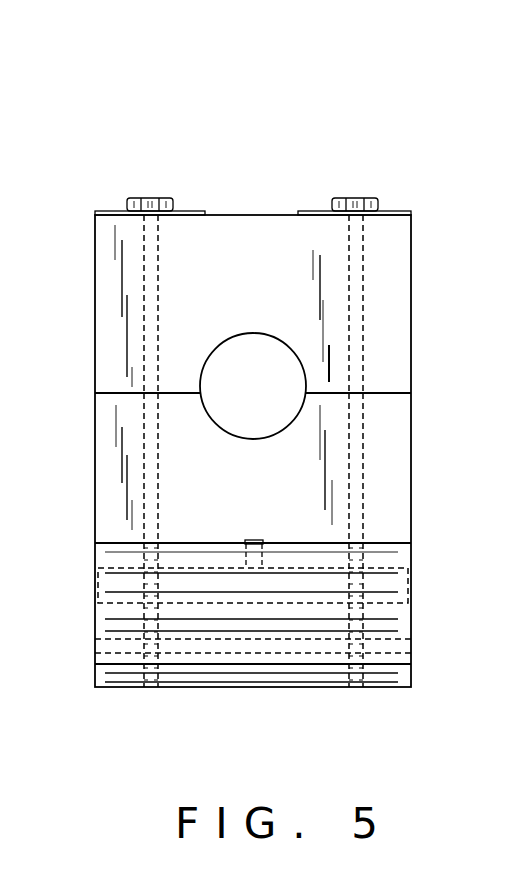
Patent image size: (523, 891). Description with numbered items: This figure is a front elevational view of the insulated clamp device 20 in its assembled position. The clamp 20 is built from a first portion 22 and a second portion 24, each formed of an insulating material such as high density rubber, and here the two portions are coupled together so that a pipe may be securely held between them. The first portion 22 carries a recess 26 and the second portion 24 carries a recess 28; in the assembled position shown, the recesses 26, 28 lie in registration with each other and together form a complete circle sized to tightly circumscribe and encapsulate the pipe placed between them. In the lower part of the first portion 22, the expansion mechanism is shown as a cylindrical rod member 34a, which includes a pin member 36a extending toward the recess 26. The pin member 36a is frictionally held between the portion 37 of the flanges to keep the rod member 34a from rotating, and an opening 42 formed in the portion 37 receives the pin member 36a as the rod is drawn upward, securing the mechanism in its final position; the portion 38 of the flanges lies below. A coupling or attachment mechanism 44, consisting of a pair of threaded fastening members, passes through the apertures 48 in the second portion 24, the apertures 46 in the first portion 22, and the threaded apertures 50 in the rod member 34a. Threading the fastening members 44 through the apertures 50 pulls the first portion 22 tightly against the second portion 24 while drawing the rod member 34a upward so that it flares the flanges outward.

The insulated clamp device 20 is at (267, 172).
The first portion 22 is at (268, 479).
The second portion 24 is at (268, 273).
The recess 26 is at (268, 427).
The recess 28 is at (267, 372).
The cylindrical rod member 34a is at (280, 603).
The pin member 36a is at (260, 558).
The portion of the flanges 37 is at (397, 552).
The portion of the flanges 38 is at (237, 688).
The opening 42 is at (252, 540).
The coupling or attachment mechanism 44 is at (167, 197).
The apertures 46 is at (143, 455).
The apertures 48 is at (143, 292).
The apertures 50 is at (143, 587).